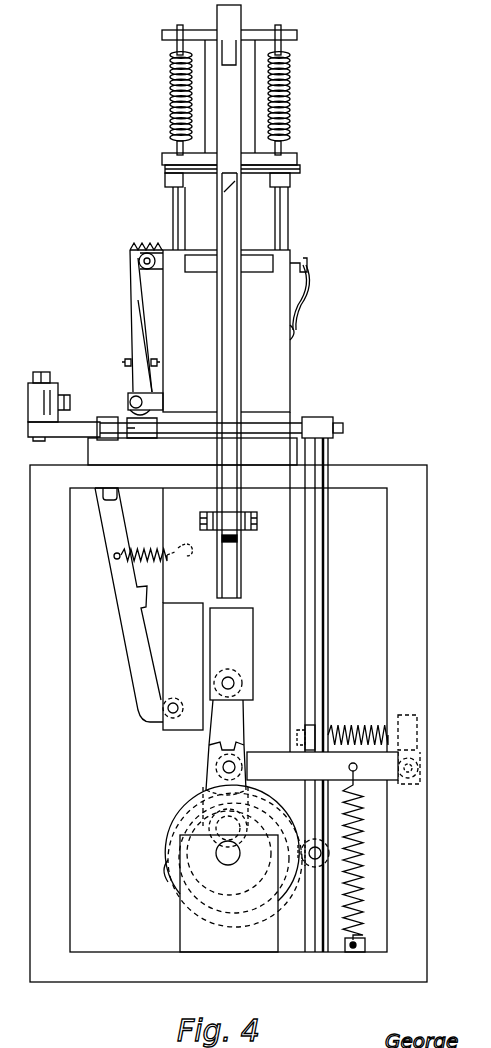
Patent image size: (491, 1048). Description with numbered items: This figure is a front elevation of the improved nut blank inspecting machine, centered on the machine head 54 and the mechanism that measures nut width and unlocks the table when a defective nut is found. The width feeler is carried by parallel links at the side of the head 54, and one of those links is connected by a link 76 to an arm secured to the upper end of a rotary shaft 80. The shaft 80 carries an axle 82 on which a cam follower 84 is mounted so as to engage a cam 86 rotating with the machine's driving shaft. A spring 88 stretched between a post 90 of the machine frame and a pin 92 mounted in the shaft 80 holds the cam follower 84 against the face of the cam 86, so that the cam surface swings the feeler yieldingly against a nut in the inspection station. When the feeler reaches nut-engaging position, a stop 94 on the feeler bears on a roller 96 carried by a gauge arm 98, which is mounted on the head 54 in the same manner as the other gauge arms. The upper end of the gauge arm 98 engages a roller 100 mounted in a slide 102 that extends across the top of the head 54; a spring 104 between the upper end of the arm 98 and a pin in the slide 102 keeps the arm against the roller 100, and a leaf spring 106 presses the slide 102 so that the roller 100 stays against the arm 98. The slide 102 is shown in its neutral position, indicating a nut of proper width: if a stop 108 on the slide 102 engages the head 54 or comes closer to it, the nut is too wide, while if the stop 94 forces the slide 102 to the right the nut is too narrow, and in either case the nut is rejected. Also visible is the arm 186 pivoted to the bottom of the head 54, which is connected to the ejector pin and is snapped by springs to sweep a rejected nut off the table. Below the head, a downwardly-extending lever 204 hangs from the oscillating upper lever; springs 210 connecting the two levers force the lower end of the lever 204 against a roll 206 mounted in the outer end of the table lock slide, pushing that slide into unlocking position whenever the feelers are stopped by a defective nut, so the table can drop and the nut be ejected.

The machine head 54 is at (226, 331).
The link 76 is at (283, 426).
The rotary shaft 80 is at (328, 593).
The axle 82 is at (304, 876).
The cam follower 84 is at (333, 855).
The cam 86 is at (168, 858).
The spring 88 is at (355, 726).
The post 90 is at (410, 592).
The pin 92 is at (325, 740).
The stop 94 is at (66, 384).
The roller 96 is at (130, 393).
The gauge arm 98 is at (130, 290).
The roller 100 is at (147, 263).
The slide 102 is at (158, 264).
The spring 104 is at (146, 246).
The leaf spring 106 is at (310, 284).
The stop 108 is at (306, 263).
The arm 186 is at (105, 561).
The downwardly-extending lever 204 is at (233, 103).
The roll 206 is at (273, 512).
The springs 210 is at (170, 67).